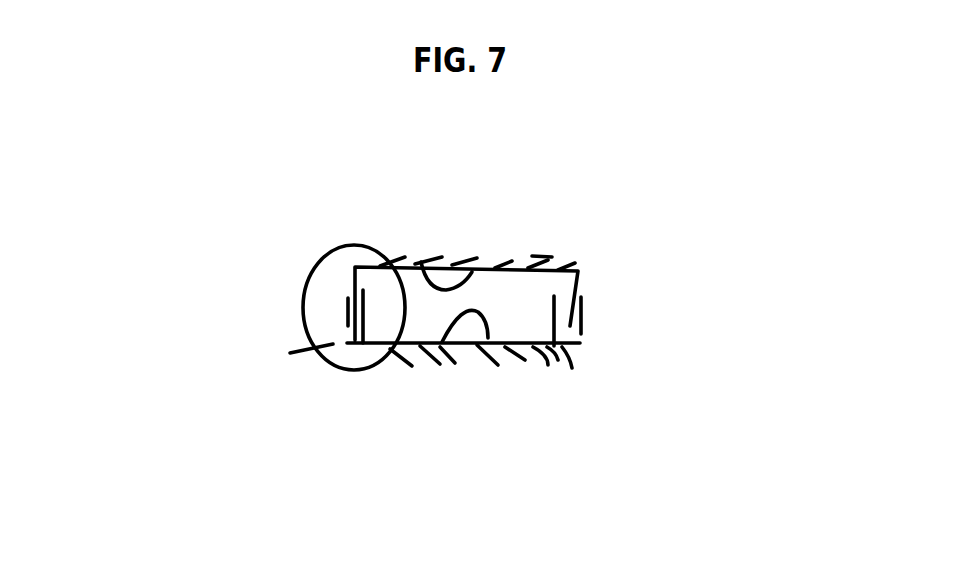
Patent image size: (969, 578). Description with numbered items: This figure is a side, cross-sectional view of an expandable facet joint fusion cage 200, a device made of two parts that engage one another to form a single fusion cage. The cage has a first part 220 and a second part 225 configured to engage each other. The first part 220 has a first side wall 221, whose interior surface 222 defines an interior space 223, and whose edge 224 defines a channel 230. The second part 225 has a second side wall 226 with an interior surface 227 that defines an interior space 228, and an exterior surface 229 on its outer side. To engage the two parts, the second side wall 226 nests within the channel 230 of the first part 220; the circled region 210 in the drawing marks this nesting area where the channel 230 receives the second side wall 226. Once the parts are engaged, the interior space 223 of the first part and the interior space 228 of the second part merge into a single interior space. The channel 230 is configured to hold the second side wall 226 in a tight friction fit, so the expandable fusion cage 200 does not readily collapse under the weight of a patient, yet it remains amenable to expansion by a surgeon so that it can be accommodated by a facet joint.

The expandable facet joint fusion cage 200 is at (712, 313).
The magnified region 210 is at (318, 355).
The first part 220 is at (455, 370).
The first side wall 221 is at (496, 347).
The interior surface 222 is at (455, 323).
The interior space 223 is at (528, 323).
The edge 224 is at (333, 345).
The second part 225 is at (530, 258).
The second side wall 226 is at (558, 268).
The interior surface 227 is at (421, 262).
The interior space 228 is at (520, 284).
The exterior surface 229 is at (513, 268).
The channel 230 is at (340, 316).